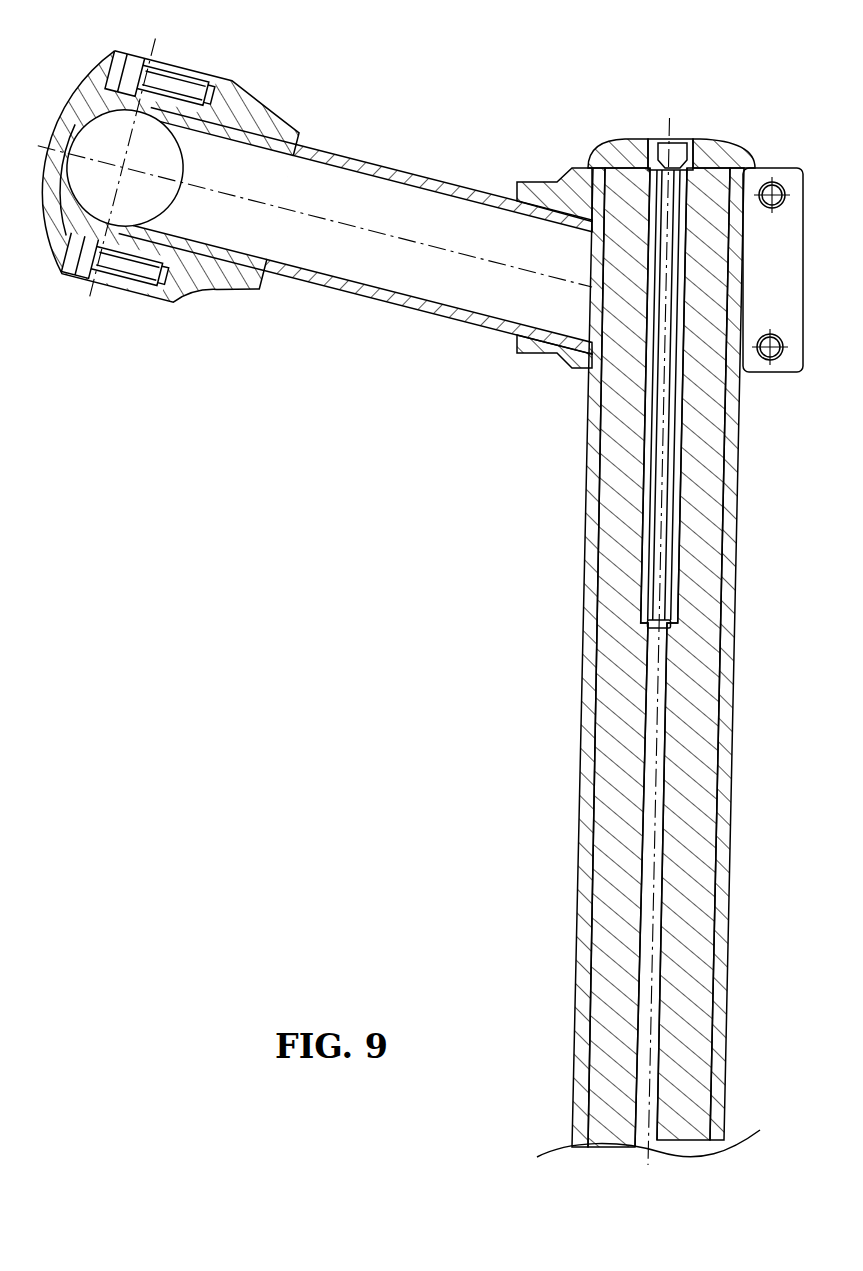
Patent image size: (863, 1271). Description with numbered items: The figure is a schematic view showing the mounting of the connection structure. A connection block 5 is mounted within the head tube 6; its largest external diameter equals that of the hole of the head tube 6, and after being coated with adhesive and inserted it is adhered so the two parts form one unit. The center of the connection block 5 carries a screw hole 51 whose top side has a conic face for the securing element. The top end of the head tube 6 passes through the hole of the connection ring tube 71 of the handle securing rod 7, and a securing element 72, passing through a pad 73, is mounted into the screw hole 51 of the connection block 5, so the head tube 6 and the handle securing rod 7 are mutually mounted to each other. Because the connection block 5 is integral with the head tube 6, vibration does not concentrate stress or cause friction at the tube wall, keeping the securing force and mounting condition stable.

The connection block 5 is at (712, 452).
The screw hole 51 is at (677, 658).
The head tube 6 is at (725, 763).
The handle securing rod 7 is at (376, 152).
The connection ring tube 71 is at (567, 182).
The securing element 72 is at (663, 218).
The pad 73 is at (720, 155).